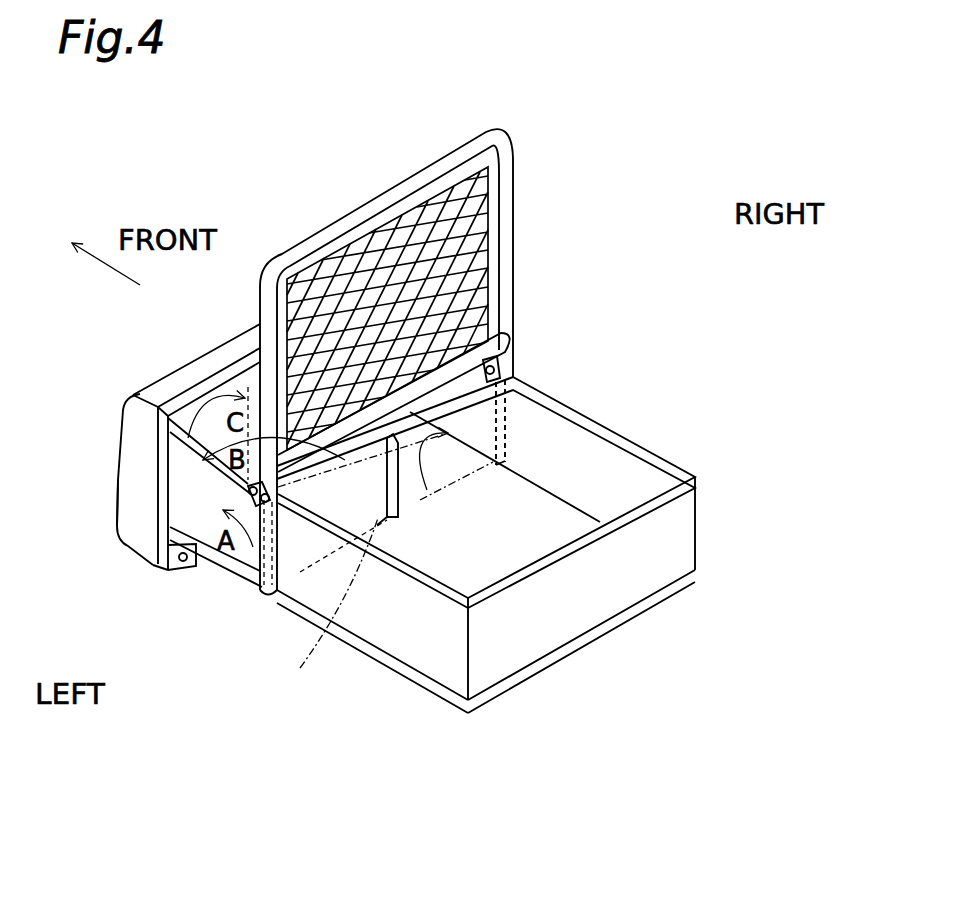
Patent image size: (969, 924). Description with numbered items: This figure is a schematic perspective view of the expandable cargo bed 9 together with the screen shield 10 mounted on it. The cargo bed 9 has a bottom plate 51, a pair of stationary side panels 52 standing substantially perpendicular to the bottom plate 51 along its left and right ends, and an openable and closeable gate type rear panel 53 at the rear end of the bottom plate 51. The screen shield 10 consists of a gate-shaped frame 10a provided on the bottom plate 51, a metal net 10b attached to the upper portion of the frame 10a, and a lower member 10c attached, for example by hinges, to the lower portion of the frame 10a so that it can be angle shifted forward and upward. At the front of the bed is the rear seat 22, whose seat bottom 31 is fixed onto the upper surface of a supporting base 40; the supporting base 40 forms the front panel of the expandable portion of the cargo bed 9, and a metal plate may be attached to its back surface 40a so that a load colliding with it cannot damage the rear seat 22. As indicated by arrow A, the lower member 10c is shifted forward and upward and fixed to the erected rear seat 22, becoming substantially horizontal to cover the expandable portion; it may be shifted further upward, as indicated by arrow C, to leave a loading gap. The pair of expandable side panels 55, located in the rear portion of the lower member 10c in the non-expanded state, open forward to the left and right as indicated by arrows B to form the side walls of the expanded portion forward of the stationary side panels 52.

The screen shield 10 is at (522, 116).
The gate-shaped frame 10a is at (405, 188).
The metal net 10b is at (365, 308).
The lower member 10c is at (170, 455).
The expandable cargo bed 9 is at (633, 348).
The bottom plate 51 is at (510, 507).
The stationary side panels 52 is at (420, 647).
The gate type rear panel 53 is at (610, 585).
The expandable side panels 55 is at (200, 523).
The supporting base 40 is at (162, 508).
The back surface of the supporting base 40a is at (122, 403).
The seat bottom 31 is at (132, 482).
The rear seat 22 is at (117, 540).